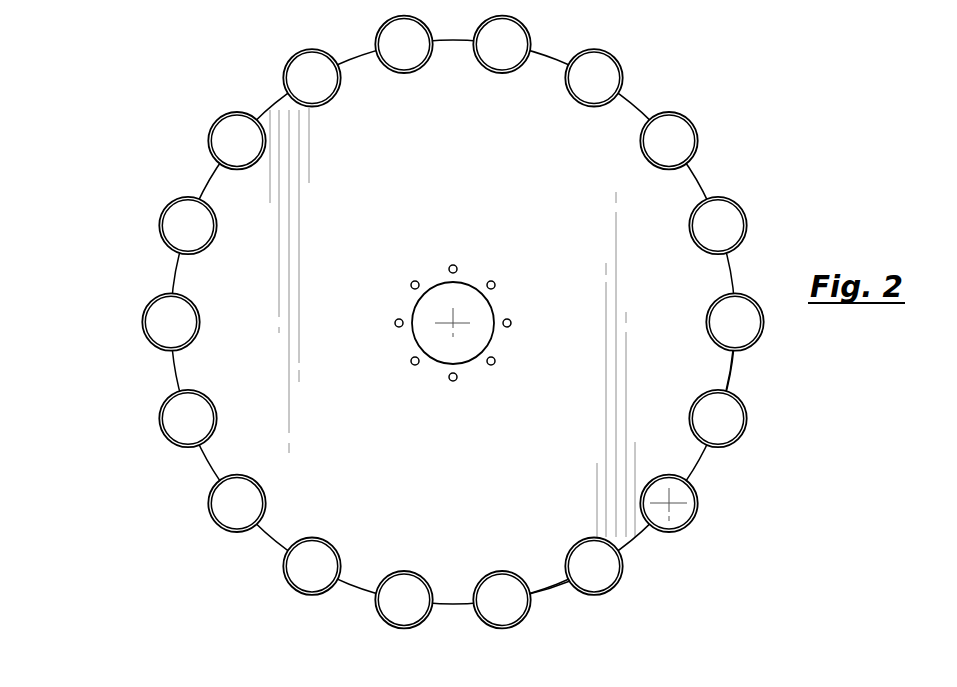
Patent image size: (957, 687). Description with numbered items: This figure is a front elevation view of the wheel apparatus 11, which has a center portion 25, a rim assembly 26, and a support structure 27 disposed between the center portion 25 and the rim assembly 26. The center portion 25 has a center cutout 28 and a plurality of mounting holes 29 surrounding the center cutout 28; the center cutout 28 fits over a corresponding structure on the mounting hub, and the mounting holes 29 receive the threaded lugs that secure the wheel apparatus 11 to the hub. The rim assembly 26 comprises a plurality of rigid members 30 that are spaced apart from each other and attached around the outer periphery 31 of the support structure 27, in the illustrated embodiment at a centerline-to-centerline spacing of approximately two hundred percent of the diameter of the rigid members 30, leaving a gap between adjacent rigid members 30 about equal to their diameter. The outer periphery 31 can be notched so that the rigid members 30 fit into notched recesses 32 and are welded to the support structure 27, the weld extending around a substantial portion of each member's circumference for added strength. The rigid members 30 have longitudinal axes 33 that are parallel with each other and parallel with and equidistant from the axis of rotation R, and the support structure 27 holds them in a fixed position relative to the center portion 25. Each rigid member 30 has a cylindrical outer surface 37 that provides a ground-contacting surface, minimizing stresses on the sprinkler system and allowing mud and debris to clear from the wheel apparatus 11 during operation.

The wheel apparatus 11 is at (523, 361).
The center portion 25 is at (423, 372).
The rim assembly 26 is at (708, 447).
The support structure 27 is at (430, 468).
The center cutout 28 is at (470, 283).
The mounting holes 29 is at (396, 319).
The rigid members 30 is at (208, 501).
The outer periphery 31 is at (732, 368).
The notched recesses 32 is at (573, 542).
The longitudinal axes 33 is at (668, 503).
The cylindrical outer surfaces 37 is at (530, 617).
The axis of rotation R is at (455, 325).